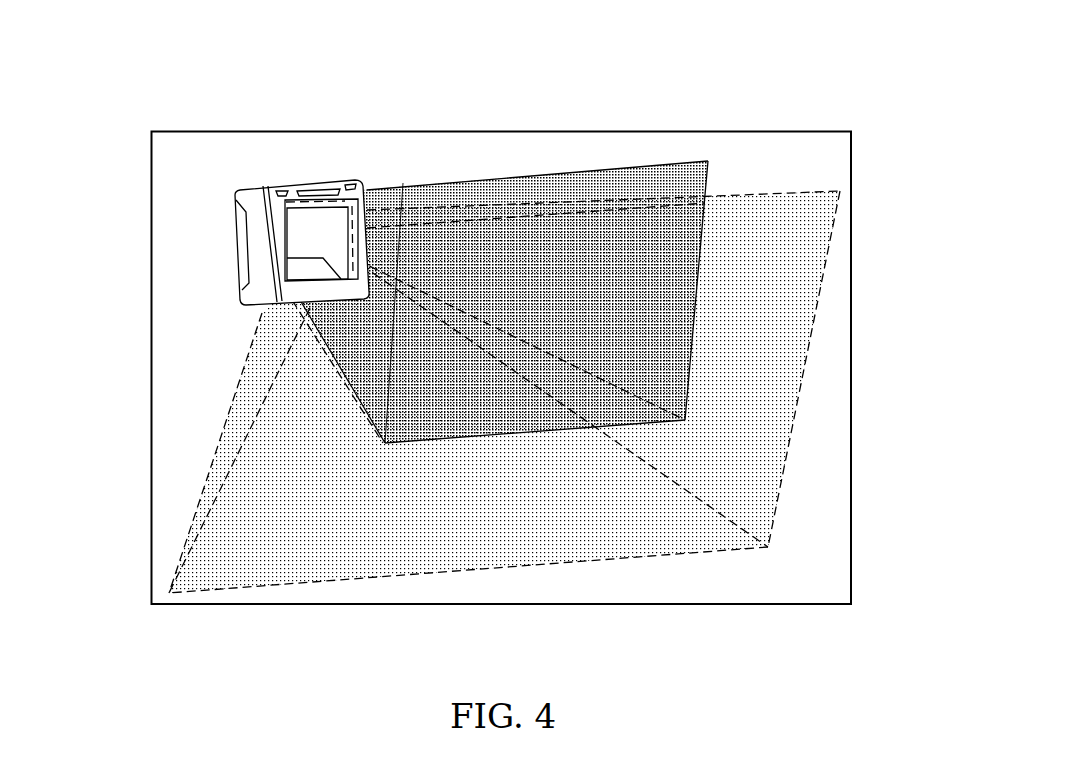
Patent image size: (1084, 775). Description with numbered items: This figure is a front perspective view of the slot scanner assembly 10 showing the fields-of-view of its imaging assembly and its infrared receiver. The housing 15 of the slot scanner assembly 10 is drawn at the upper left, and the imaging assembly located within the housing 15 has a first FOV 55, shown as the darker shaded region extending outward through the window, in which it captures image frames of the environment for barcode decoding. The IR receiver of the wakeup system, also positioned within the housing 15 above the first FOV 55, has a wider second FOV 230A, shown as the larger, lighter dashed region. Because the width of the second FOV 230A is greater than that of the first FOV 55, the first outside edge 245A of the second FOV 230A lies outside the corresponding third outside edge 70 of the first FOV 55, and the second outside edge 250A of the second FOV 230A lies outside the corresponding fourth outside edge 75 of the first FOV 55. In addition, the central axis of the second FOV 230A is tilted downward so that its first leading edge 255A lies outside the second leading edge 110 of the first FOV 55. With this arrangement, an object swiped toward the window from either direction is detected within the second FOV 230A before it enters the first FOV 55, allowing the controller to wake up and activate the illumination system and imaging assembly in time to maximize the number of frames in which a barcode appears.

The slot scanner assembly 10 is at (273, 192).
The housing 15 is at (235, 207).
The first FOV 55 is at (653, 185).
The third outside edge 70 is at (385, 395).
The fourth outside edge 75 is at (698, 281).
The second leading edge 110 is at (492, 437).
The second FOV 230A is at (782, 210).
The first outside edge 245A is at (243, 440).
The second outside edge 250A is at (788, 424).
The first leading edge 255A is at (677, 553).